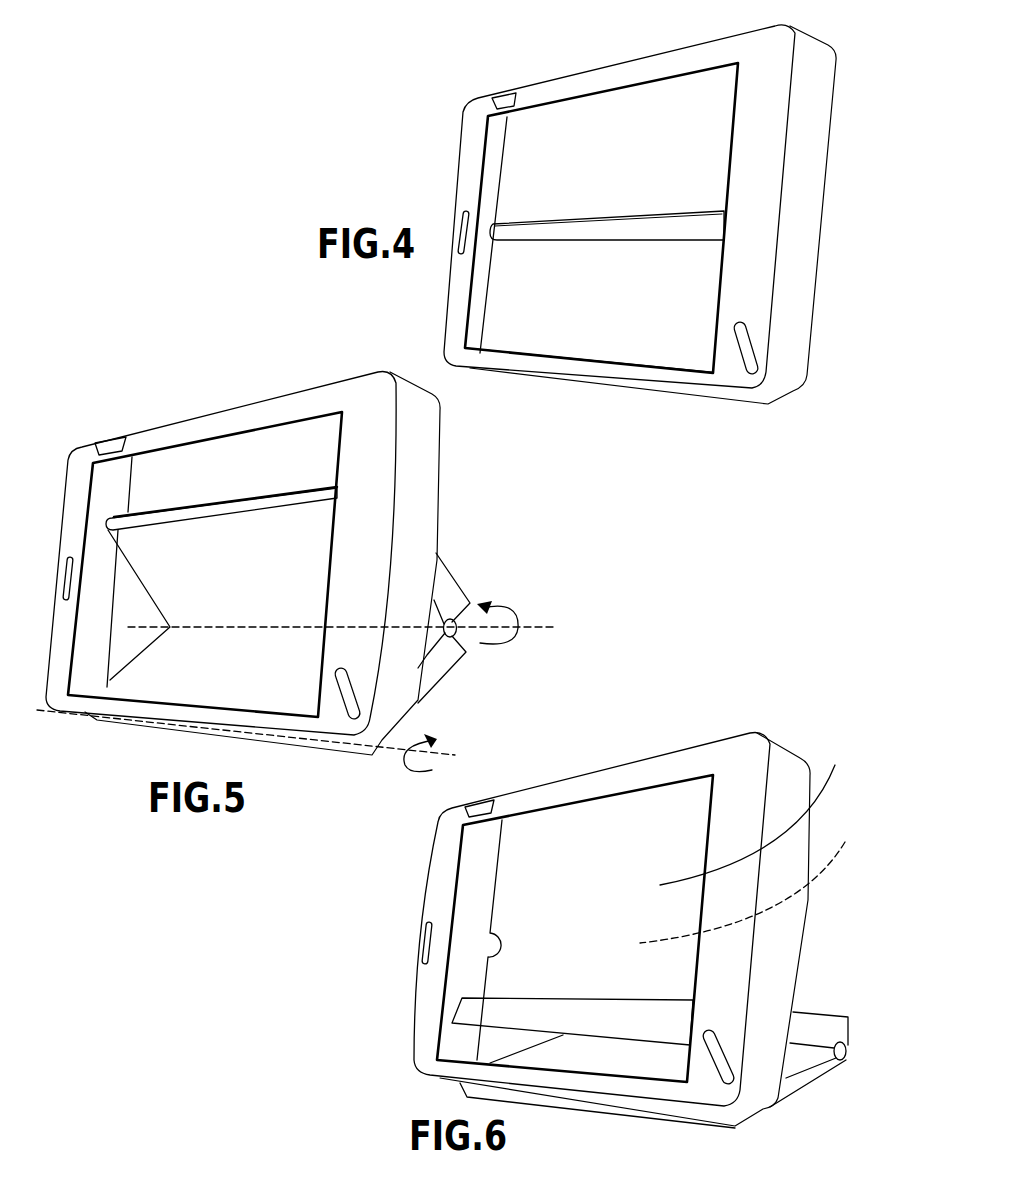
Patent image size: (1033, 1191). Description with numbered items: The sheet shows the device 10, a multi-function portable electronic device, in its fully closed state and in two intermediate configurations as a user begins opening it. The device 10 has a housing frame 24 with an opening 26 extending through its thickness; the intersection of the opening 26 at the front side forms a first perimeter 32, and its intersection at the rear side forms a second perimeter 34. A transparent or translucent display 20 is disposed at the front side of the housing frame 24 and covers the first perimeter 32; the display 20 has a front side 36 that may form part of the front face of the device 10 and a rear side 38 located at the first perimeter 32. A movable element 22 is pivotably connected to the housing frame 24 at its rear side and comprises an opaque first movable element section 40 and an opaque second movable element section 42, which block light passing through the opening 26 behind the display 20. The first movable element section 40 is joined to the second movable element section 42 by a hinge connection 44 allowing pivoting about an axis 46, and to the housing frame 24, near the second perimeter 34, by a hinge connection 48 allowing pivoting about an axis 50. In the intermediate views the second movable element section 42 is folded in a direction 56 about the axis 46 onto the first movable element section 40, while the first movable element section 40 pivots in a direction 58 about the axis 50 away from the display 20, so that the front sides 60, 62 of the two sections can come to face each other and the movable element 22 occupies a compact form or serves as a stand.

In FIG. 4, the device 10 is at (438, 113).
In FIG. 5, the device 10 is at (110, 418).
In FIG. 6, the device 10 is at (370, 888).
In FIG. 6, the display 20 is at (700, 805).
In FIG. 4, the movable element 22 is at (600, 118).
In FIG. 5, the movable element 22 is at (205, 564).
In FIG. 4, the housing frame 24 is at (770, 95).
In FIG. 5, the housing frame 24 is at (373, 402).
In FIG. 6, the housing frame 24 is at (653, 775).
In FIG. 6, the opening 26 is at (460, 857).
In FIG. 6, the first perimeter 32 is at (463, 912).
In FIG. 6, the second perimeter 34 is at (503, 945).
In FIG. 6, the front side of the display 36 is at (755, 809).
In FIG. 6, the rear side of the display 38 is at (753, 879).
In FIG. 4, the first movable element section 40 is at (562, 305).
In FIG. 5, the first movable element section 40 is at (428, 672).
In FIG. 4, the second movable element section 42 is at (703, 125).
In FIG. 5, the second movable element section 42 is at (455, 578).
In FIG. 4, the hinge connection 44 is at (543, 230).
In FIG. 5, the axis 46 is at (532, 626).
In FIG. 6, the hinge connection 48 is at (745, 1107).
In FIG. 5, the axis 50 is at (440, 752).
In FIG. 5, the direction 56 is at (505, 644).
In FIG. 5, the direction 58 is at (403, 767).
In FIG. 4, the front side of the first movable element section 60 is at (680, 325).
In FIG. 5, the front side of the first movable element section 60 is at (183, 665).
In FIG. 6, the front side of the first movable element section 60 is at (718, 1057).
In FIG. 4, the front side of the second movable element section 62 is at (660, 100).
In FIG. 5, the front side of the second movable element section 62 is at (243, 540).
In FIG. 6, the front side of the second movable element section 62 is at (572, 1030).